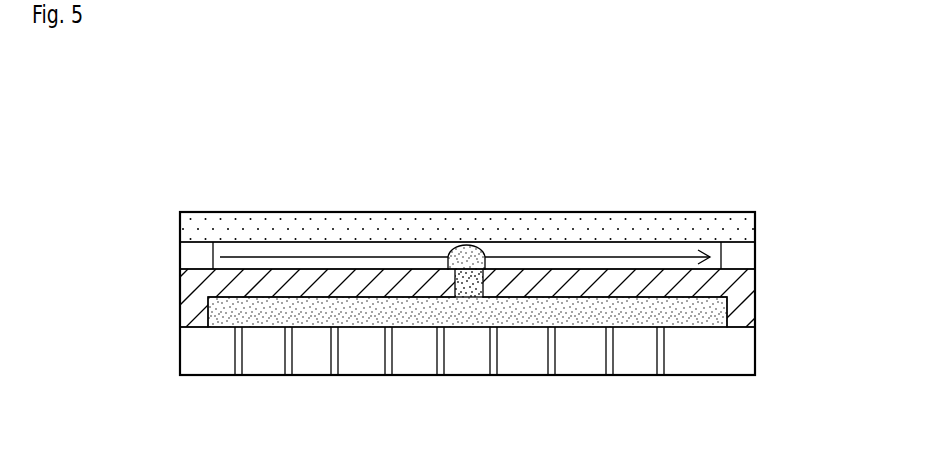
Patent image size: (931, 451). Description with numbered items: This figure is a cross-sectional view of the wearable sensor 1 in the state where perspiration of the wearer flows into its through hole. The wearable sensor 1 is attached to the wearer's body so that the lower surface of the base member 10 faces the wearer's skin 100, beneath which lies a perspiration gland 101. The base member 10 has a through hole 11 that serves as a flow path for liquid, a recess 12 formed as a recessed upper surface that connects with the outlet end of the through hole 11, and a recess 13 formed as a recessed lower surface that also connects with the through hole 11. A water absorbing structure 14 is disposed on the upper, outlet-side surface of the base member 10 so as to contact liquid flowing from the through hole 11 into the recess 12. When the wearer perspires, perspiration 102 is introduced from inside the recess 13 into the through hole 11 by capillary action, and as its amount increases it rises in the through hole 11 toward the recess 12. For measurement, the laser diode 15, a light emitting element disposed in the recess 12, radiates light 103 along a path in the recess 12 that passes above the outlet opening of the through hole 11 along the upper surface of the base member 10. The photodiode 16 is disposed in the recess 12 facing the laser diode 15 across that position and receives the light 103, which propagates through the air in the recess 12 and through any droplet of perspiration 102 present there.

The wearable sensor 1 is at (420, 148).
The base member 10 is at (756, 287).
The through hole 11 is at (450, 278).
The recess 12 is at (538, 247).
The recess 13 is at (321, 312).
The water absorbing structure 14 is at (633, 212).
The laser diode 15 is at (200, 257).
The photodiode 16 is at (735, 257).
The wearer's skin 100 is at (756, 347).
The perspiration gland 101 is at (660, 375).
The perspiration 102 is at (478, 308).
The light 103 is at (307, 257).